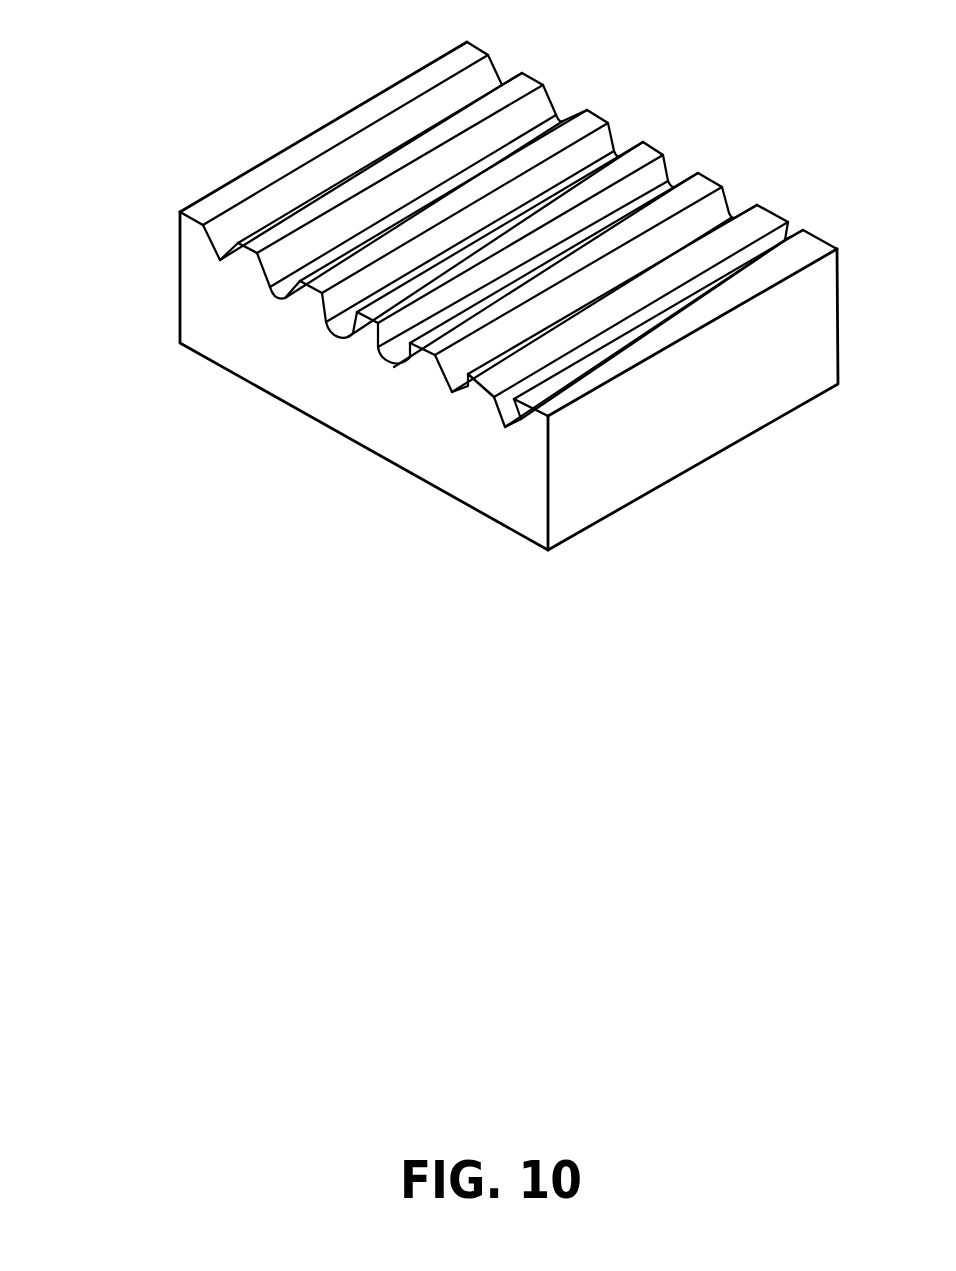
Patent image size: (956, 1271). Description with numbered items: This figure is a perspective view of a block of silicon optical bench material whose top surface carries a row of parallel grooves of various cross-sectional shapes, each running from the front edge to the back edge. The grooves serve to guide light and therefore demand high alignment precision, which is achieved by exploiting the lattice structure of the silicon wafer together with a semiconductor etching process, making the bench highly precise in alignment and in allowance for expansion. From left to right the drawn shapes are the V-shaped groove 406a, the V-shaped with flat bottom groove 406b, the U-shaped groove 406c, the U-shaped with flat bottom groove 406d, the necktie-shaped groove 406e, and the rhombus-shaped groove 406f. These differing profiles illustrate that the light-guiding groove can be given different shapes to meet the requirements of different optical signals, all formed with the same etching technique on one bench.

The V-shaped groove 406a is at (223, 237).
The V-shaped with flat bottom groove 406b is at (279, 271).
The U-shaped groove 406c is at (342, 315).
The U-shaped with flat bottom groove 406d is at (393, 338).
The necktie-shaped groove 406e is at (457, 373).
The rhombus-shaped groove 406f is at (513, 400).